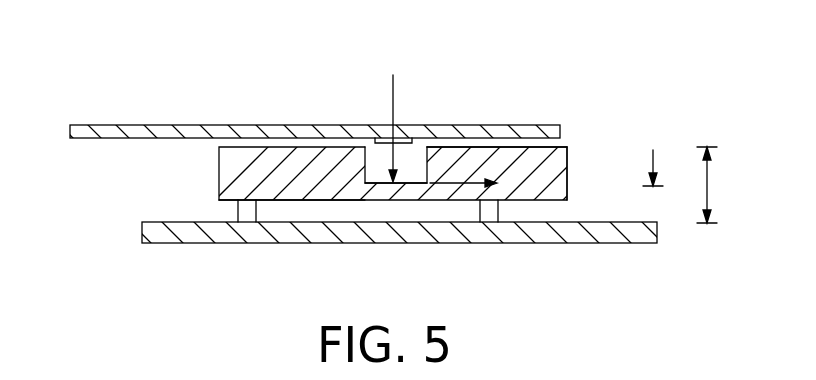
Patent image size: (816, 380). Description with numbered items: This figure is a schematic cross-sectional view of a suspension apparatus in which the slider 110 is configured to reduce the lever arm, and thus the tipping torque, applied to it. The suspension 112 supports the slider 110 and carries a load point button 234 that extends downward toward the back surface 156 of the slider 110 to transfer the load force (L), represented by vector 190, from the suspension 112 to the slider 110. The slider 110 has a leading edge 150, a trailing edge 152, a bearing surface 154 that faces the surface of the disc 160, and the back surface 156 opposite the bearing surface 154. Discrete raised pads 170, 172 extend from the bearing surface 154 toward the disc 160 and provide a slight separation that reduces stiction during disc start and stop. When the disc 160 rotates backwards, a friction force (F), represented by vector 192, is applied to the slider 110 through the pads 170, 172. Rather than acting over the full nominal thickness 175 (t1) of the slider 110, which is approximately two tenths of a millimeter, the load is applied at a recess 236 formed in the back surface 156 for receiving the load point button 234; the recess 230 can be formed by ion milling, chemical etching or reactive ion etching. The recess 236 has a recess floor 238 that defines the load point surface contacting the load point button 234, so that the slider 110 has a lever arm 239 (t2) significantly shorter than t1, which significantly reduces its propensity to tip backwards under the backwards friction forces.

The slider 110 is at (199, 199).
The suspension 112 is at (167, 125).
The leading edge 150 is at (218, 168).
The trailing edge 152 is at (567, 180).
The bearing surface 154 is at (300, 199).
The back surface 156 is at (560, 147).
The disc 160 is at (605, 243).
The pad 170 is at (238, 212).
The pad 172 is at (498, 213).
The nominal thickness 175 is at (708, 188).
The load force vector 190 is at (395, 108).
The friction force vector 192 is at (443, 187).
The recess 230 is at (583, 102).
The load point button 234 is at (392, 182).
The recess 236 is at (403, 183).
The recess floor 238 is at (385, 184).
The lever arm 239 is at (656, 184).